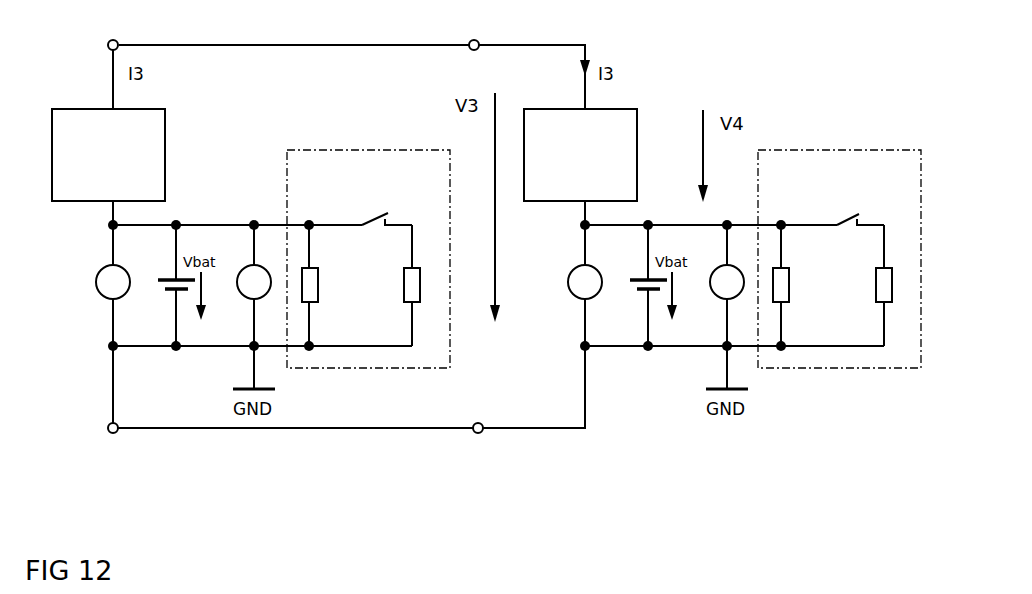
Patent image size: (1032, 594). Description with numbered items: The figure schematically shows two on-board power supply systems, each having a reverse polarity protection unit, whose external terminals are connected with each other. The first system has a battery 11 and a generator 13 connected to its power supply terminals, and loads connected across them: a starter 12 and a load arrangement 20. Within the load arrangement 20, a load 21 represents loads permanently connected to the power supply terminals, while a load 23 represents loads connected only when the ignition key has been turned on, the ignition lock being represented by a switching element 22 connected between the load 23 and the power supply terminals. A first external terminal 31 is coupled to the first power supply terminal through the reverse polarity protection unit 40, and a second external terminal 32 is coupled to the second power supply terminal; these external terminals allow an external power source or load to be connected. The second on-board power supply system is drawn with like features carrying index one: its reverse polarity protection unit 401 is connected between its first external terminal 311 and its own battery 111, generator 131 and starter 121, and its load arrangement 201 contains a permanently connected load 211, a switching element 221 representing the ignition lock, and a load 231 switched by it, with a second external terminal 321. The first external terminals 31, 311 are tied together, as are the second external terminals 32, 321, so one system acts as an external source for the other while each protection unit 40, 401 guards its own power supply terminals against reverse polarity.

The first external terminal of the second on-board power supply system 311 is at (112, 40).
The first external terminal 31 is at (470, 40).
The second external terminal of the second on-board power supply system 321 is at (114, 434).
The second external terminal 32 is at (479, 434).
The reverse polarity protection unit of the second on-board power supply system 401 is at (166, 145).
The reverse polarity protection unit 40 is at (638, 145).
The starter of the second on-board power supply system 121 is at (98, 275).
The starter 12 is at (570, 275).
The battery of the second on-board power supply system 111 is at (164, 278).
The battery 11 is at (640, 278).
The generator of the second on-board power supply system 131 is at (244, 267).
The generator 13 is at (714, 267).
The load arrangement of the second on-board power supply system 201 is at (365, 150).
The load arrangement 20 is at (840, 150).
The permanently connected load of the second on-board power supply system 211 is at (318, 283).
The load 21 is at (789, 283).
The switching element of the second on-board power supply system 221 is at (377, 213).
The switching element 22 is at (851, 214).
The ignition-switched load of the second on-board power supply system 231 is at (404, 280).
The load 23 is at (876, 280).